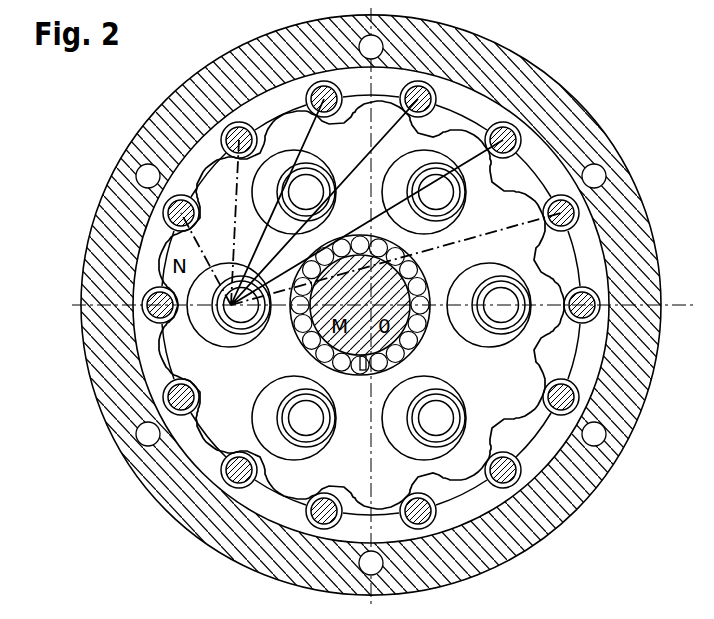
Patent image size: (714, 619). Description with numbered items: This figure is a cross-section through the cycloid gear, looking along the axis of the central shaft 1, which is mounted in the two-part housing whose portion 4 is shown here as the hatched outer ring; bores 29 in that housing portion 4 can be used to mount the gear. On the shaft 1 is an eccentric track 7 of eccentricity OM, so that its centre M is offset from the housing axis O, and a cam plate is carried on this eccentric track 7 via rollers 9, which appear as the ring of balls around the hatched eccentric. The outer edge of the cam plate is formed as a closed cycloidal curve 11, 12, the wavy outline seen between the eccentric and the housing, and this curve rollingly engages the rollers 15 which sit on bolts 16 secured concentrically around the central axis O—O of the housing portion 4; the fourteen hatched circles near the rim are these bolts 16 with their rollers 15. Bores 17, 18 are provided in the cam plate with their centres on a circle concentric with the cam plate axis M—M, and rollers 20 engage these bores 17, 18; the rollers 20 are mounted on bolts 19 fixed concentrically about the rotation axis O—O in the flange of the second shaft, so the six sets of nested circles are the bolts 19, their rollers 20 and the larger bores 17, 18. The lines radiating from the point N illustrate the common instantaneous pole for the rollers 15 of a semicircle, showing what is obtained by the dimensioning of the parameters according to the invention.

The housing 4 is at (631, 186).
The bores 29 is at (604, 438).
The closed cycloidal curve 11 is at (589, 250).
The closed cycloidal curve 12 is at (591, 271).
The rollers 15 is at (592, 300).
The bolts 16 is at (600, 318).
The bores 18 is at (510, 268).
The bores 17 is at (454, 318).
The rollers 20 is at (481, 325).
The bolts 19 is at (502, 322).
The shaft 1 is at (421, 270).
The rollers 9 is at (334, 368).
The eccentric track 7 is at (366, 362).